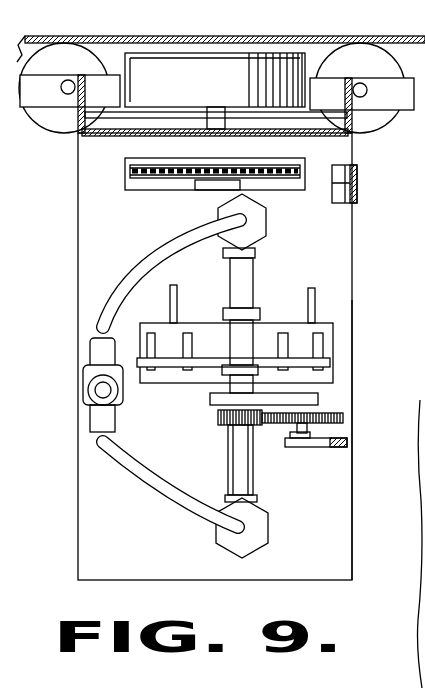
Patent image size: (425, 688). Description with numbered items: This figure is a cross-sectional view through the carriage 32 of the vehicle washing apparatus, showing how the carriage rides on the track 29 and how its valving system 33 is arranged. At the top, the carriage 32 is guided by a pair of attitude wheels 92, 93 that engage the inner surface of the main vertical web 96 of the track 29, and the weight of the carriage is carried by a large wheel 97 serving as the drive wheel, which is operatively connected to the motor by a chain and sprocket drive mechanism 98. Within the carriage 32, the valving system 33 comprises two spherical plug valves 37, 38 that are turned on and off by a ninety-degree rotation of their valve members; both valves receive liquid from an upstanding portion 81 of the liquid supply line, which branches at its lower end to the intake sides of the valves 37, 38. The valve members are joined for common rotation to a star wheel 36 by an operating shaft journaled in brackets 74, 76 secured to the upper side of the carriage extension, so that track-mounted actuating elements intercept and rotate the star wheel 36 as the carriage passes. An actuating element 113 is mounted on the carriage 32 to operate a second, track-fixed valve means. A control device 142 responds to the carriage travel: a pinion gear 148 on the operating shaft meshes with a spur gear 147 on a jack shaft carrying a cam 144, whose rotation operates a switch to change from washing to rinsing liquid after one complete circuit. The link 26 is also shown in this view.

The link arm 26 is at (120, 485).
The track 29 is at (272, 36).
The carriage 32 is at (346, 537).
The valving system 33 is at (300, 250).
The star wheel 36 is at (353, 352).
The valve 37 is at (262, 537).
The valve 38 is at (262, 230).
The bracket 74 is at (316, 399).
The bracket 76 is at (314, 310).
The upstanding portion 81 is at (85, 390).
The attitude wheel 92 is at (367, 50).
The attitude wheel 93 is at (72, 53).
The main vertical web 96 is at (122, 38).
The large wheel 97 is at (226, 86).
The chain and sprocket drive mechanism 98 is at (122, 177).
The actuating element 113 is at (358, 190).
The control device 142 is at (302, 452).
The cam 144 is at (348, 443).
The spur gear 147 is at (345, 418).
The pinion gear 148 is at (220, 418).